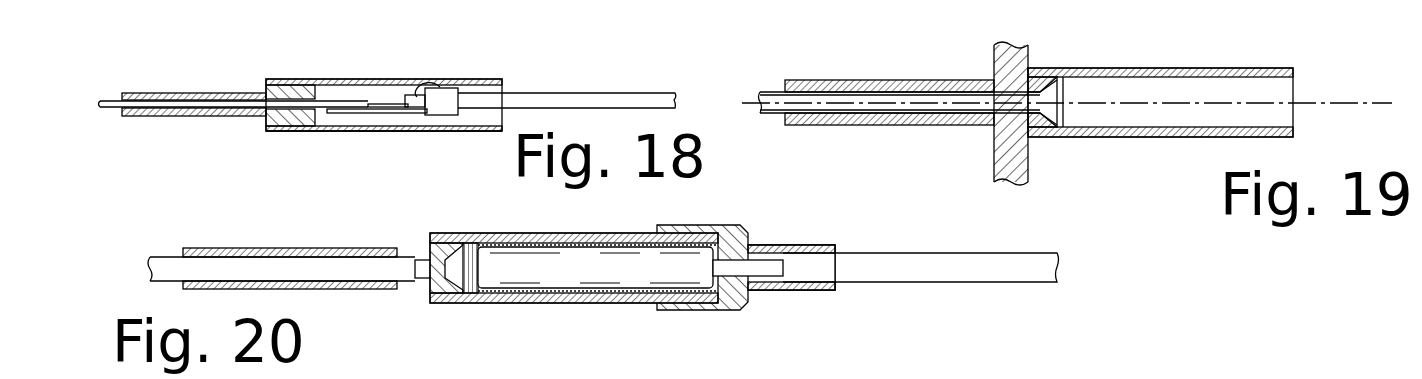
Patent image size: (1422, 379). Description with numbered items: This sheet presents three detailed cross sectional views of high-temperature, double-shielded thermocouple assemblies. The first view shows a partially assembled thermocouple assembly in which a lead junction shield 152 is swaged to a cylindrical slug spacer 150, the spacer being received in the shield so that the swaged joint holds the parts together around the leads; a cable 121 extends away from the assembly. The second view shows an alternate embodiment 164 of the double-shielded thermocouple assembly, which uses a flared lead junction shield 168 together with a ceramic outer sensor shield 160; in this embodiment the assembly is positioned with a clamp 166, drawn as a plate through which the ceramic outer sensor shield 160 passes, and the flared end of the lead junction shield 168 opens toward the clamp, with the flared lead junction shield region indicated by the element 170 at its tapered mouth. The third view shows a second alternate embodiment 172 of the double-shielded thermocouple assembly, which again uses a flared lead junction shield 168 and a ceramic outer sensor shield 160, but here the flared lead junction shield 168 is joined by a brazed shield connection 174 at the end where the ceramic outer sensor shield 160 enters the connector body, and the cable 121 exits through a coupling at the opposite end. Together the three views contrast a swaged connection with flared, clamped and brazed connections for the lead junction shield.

In FIG. 18, the cable 121 is at (573, 92).
In FIG. 20, the cable 121 is at (918, 282).
In FIG. 18, the cylindrical slug spacer 150 is at (263, 88).
In FIG. 18, the lead junction shield 152 is at (402, 131).
In FIG. 18, the ceramic outer sensor shield 160 is at (175, 93).
In FIG. 19, the ceramic outer sensor shield 160 is at (838, 52).
In FIG. 19, the alternate embodiment 164 is at (938, 135).
In FIG. 19, the clamp 166 is at (1023, 150).
In FIG. 19, the flared lead junction shield 168 is at (1277, 68).
In FIG. 20, the flared lead junction shield 168 is at (523, 303).
In FIG. 19, the tapered nose 170 is at (1061, 98).
In FIG. 20, the second alternate embodiment 172 is at (803, 233).
In FIG. 20, the brazed shield connection 174 is at (422, 296).